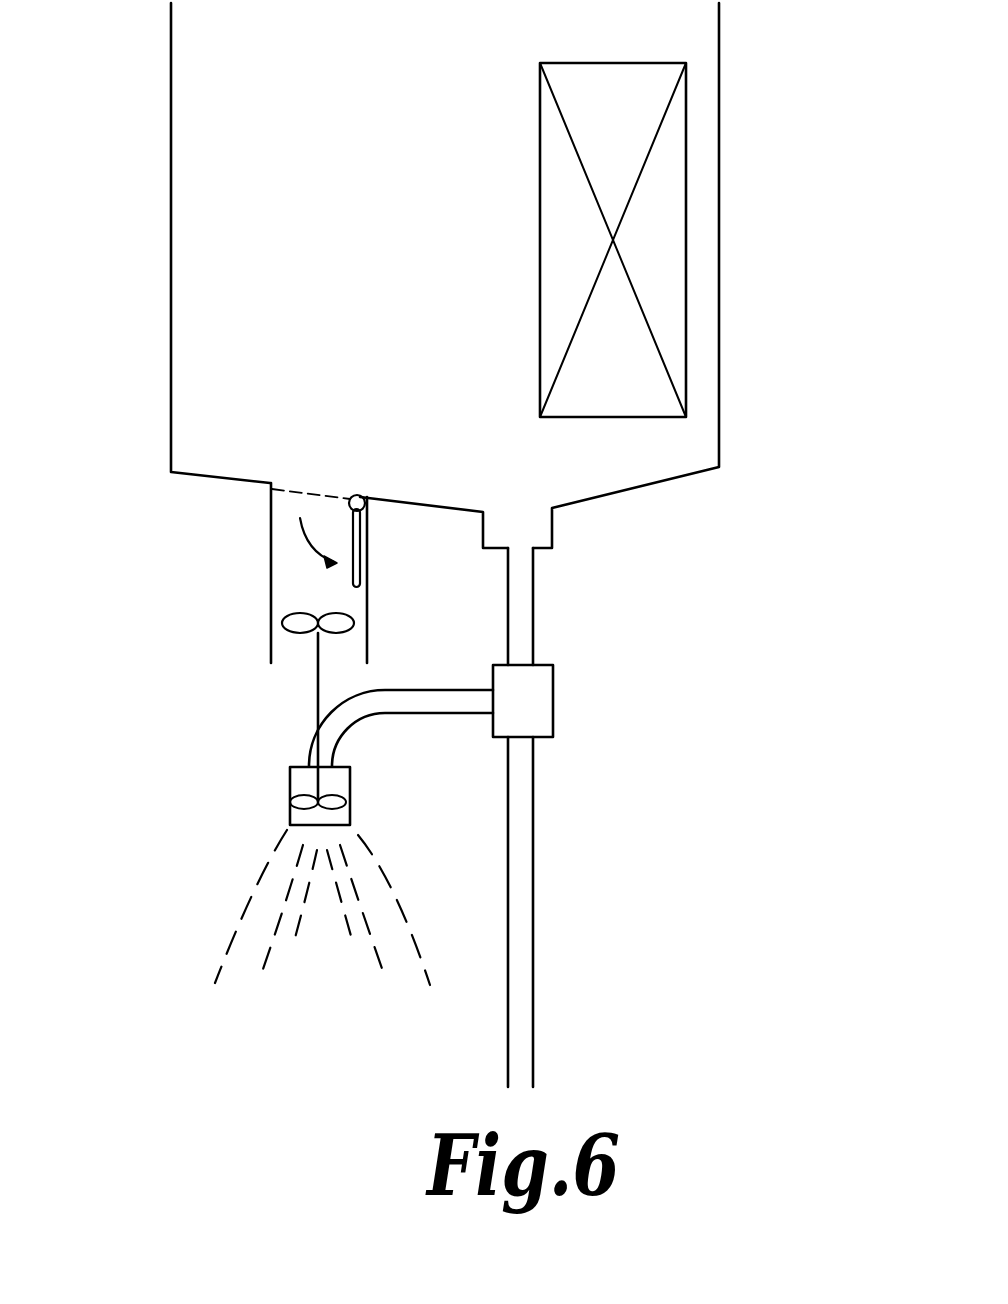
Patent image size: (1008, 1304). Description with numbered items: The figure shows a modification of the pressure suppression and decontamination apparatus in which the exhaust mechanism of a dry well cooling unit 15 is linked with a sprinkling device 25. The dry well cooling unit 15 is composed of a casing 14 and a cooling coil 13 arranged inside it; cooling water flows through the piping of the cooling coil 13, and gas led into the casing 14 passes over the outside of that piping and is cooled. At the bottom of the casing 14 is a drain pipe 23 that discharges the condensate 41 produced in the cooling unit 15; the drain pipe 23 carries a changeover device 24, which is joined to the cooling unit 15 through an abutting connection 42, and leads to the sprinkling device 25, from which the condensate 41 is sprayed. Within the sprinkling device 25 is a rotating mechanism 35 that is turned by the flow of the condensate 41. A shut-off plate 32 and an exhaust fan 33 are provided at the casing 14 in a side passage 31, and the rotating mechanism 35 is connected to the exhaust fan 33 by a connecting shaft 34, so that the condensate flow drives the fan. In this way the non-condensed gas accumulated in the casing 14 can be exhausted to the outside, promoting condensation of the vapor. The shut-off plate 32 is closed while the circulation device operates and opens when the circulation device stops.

The cooling coil 13 is at (539, 176).
The casing 14 is at (171, 197).
The dry well cooling unit 15 is at (733, 194).
The drain pipe 23 is at (535, 940).
The changeover device 24 is at (553, 700).
The sprinkling device 25 is at (290, 800).
The air duct 31 is at (271, 532).
The shut-off plate 32 is at (354, 537).
The exhaust fan 33 is at (271, 632).
The connecting shaft 34 is at (317, 688).
The rotating mechanism 35 is at (350, 800).
The condensate 41 is at (221, 956).
The abutting connection 42 is at (536, 554).